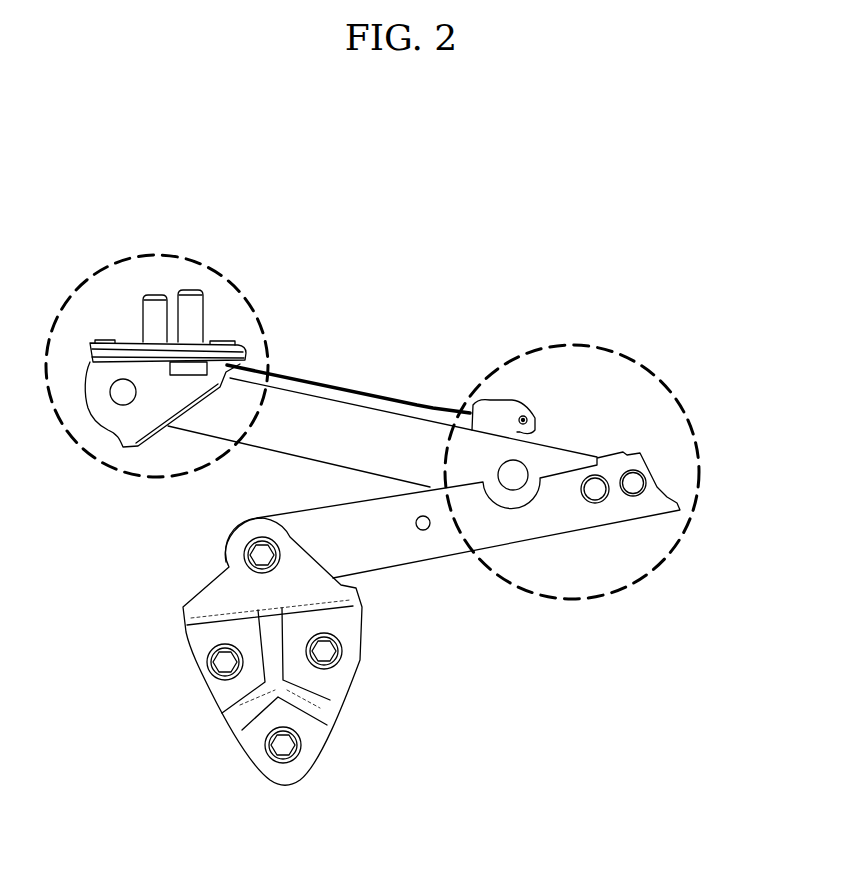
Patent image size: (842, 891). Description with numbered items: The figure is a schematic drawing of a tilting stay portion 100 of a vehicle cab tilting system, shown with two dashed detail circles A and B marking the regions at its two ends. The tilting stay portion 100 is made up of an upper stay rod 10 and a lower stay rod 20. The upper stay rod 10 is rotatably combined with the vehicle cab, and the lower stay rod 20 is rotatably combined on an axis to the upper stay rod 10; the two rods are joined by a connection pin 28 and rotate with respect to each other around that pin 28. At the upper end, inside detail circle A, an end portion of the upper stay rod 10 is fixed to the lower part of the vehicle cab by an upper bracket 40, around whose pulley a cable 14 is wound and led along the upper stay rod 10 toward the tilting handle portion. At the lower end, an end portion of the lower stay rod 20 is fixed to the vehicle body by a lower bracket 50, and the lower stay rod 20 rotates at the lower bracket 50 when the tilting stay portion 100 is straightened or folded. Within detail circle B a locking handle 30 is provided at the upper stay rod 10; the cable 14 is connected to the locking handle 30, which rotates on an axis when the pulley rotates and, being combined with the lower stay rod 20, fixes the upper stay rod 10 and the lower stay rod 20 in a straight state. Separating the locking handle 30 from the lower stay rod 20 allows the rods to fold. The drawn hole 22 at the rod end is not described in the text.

The tilting stay portion 100 is at (357, 157).
The upper stay rod 10 is at (372, 432).
The cable 14 is at (302, 378).
The lower stay rod 20 is at (430, 548).
The fastening hole 22 is at (633, 484).
The connection pin 28 is at (595, 492).
The locking handle 30 is at (519, 402).
The upper bracket 40 is at (128, 318).
The lower bracket 50 is at (205, 710).
The detail region A is at (227, 277).
The detail region B is at (628, 353).